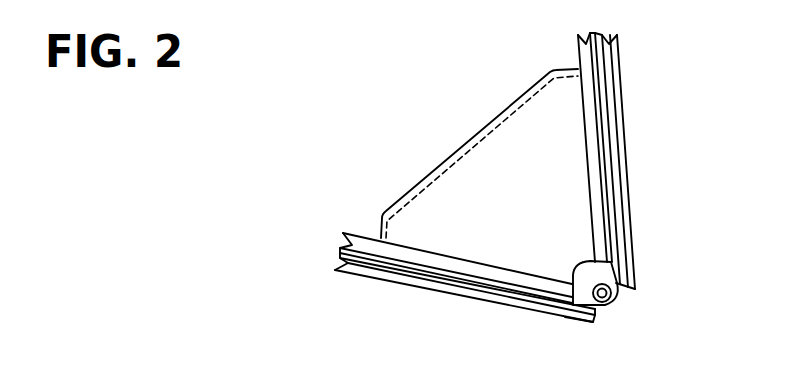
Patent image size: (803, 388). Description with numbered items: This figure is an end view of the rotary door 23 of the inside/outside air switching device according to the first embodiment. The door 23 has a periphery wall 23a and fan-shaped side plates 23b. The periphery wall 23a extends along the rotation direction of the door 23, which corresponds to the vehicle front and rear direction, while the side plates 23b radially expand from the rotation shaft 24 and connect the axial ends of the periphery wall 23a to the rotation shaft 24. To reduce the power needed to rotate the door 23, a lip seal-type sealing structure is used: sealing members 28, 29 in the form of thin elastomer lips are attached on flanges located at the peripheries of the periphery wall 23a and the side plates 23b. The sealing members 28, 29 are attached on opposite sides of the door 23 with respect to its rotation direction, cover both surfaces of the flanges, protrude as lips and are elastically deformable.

The rotary door 23 is at (454, 126).
The periphery wall 23a is at (498, 118).
The side plate 23b is at (478, 190).
The rotation shaft 24 is at (610, 300).
The sealing member 28 is at (377, 282).
The sealing member 29 is at (625, 130).